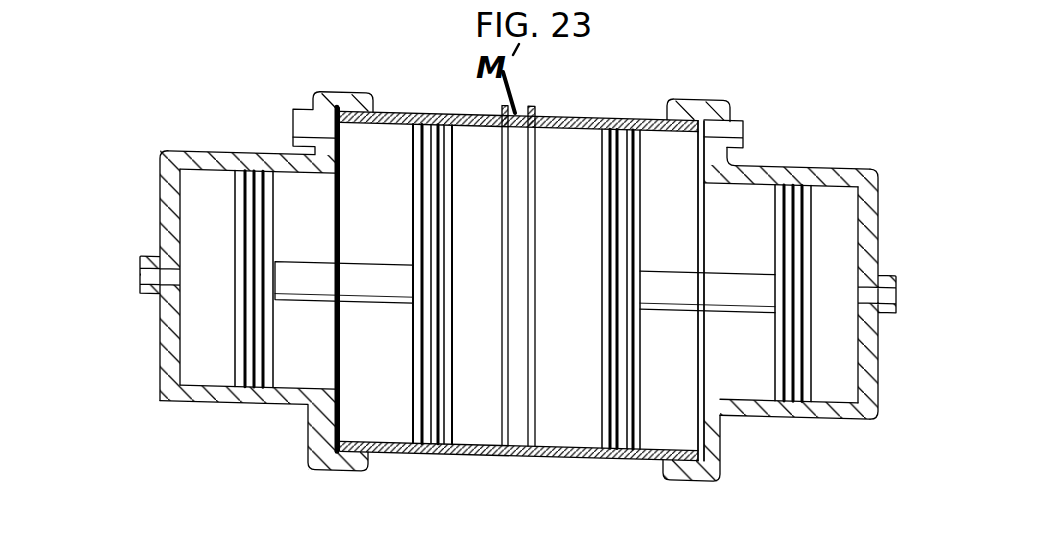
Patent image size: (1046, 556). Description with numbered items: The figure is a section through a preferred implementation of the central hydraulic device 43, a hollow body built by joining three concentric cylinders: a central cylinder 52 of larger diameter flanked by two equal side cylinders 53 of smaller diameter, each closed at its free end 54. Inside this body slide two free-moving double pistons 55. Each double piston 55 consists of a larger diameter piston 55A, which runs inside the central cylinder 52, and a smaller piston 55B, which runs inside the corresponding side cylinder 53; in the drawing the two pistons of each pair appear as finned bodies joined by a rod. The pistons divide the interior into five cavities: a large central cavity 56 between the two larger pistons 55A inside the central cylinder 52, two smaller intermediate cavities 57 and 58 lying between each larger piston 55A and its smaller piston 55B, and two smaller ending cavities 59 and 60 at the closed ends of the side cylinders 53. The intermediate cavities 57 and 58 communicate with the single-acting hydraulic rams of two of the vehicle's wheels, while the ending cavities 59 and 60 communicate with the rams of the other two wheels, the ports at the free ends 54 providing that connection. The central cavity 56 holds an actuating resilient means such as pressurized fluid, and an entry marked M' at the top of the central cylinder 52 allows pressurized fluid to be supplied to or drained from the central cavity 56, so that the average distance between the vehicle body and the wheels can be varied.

The central hydraulic cylinder 43 is at (735, 107).
The central cylinder 52 is at (590, 121).
The side cylinder 53 is at (210, 400).
The free end 54 is at (168, 337).
The double piston 55 is at (377, 306).
The larger diameter piston 55A is at (425, 456).
The smaller piston 55B is at (240, 358).
The central cavity 56 is at (570, 420).
The intermediate cavity 57 is at (345, 452).
The intermediate cavity 58 is at (750, 372).
The ending cavity 59 is at (203, 205).
The ending cavity 60 is at (833, 273).